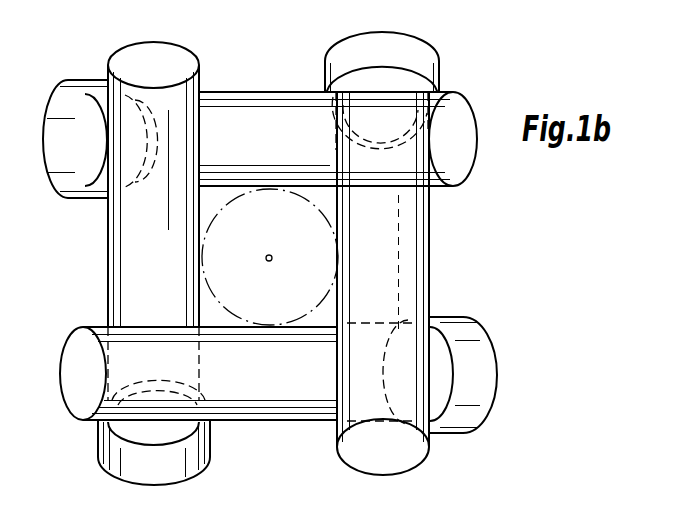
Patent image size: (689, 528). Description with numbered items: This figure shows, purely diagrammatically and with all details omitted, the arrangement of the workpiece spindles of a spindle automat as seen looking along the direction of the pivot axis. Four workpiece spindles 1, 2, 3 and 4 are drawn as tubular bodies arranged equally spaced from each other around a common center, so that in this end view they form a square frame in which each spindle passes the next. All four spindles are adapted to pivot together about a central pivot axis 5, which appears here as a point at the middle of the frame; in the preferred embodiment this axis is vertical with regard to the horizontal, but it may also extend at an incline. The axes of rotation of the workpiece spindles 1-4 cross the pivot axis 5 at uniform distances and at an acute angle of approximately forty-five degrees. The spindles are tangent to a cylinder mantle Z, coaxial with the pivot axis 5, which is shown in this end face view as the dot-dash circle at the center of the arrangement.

The workpiece spindle 1 is at (487, 402).
The workpiece spindle 2 is at (112, 455).
The workpiece spindle 3 is at (75, 192).
The workpiece spindle 4 is at (428, 57).
The pivot axis 5 is at (266, 262).
The cylinder mantle Z is at (337, 243).